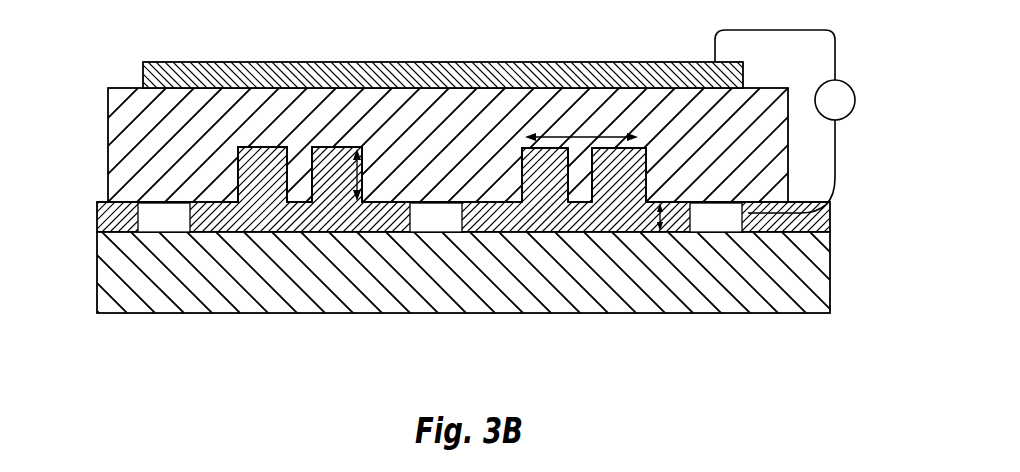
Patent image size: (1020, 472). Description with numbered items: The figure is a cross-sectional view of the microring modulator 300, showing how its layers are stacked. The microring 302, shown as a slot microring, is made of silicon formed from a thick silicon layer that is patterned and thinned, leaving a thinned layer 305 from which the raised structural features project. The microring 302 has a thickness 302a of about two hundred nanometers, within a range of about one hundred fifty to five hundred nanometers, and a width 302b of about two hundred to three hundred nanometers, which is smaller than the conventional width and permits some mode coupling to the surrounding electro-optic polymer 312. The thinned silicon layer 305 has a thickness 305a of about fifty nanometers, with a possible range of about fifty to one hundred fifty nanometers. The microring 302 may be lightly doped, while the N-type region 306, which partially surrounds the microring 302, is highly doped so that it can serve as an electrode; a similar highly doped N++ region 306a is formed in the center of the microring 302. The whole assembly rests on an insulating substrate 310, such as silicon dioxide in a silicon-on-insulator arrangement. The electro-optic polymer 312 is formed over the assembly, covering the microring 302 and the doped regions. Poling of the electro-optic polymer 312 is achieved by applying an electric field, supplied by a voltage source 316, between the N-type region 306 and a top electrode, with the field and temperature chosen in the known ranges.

The microring modulator 300 is at (459, 187).
The microring 302 is at (291, 130).
The thickness of the microring 302a is at (362, 152).
The width of the microring 302b is at (573, 137).
The thinned layer 305 is at (110, 220).
The thickness of the thinned silicon layer 305a is at (657, 220).
The N-type region 306 is at (468, 303).
The N++ region 306a is at (443, 233).
The insulating substrate 310 is at (200, 290).
The electro-optic polymer 312 is at (115, 158).
The voltage source 316 is at (821, 86).